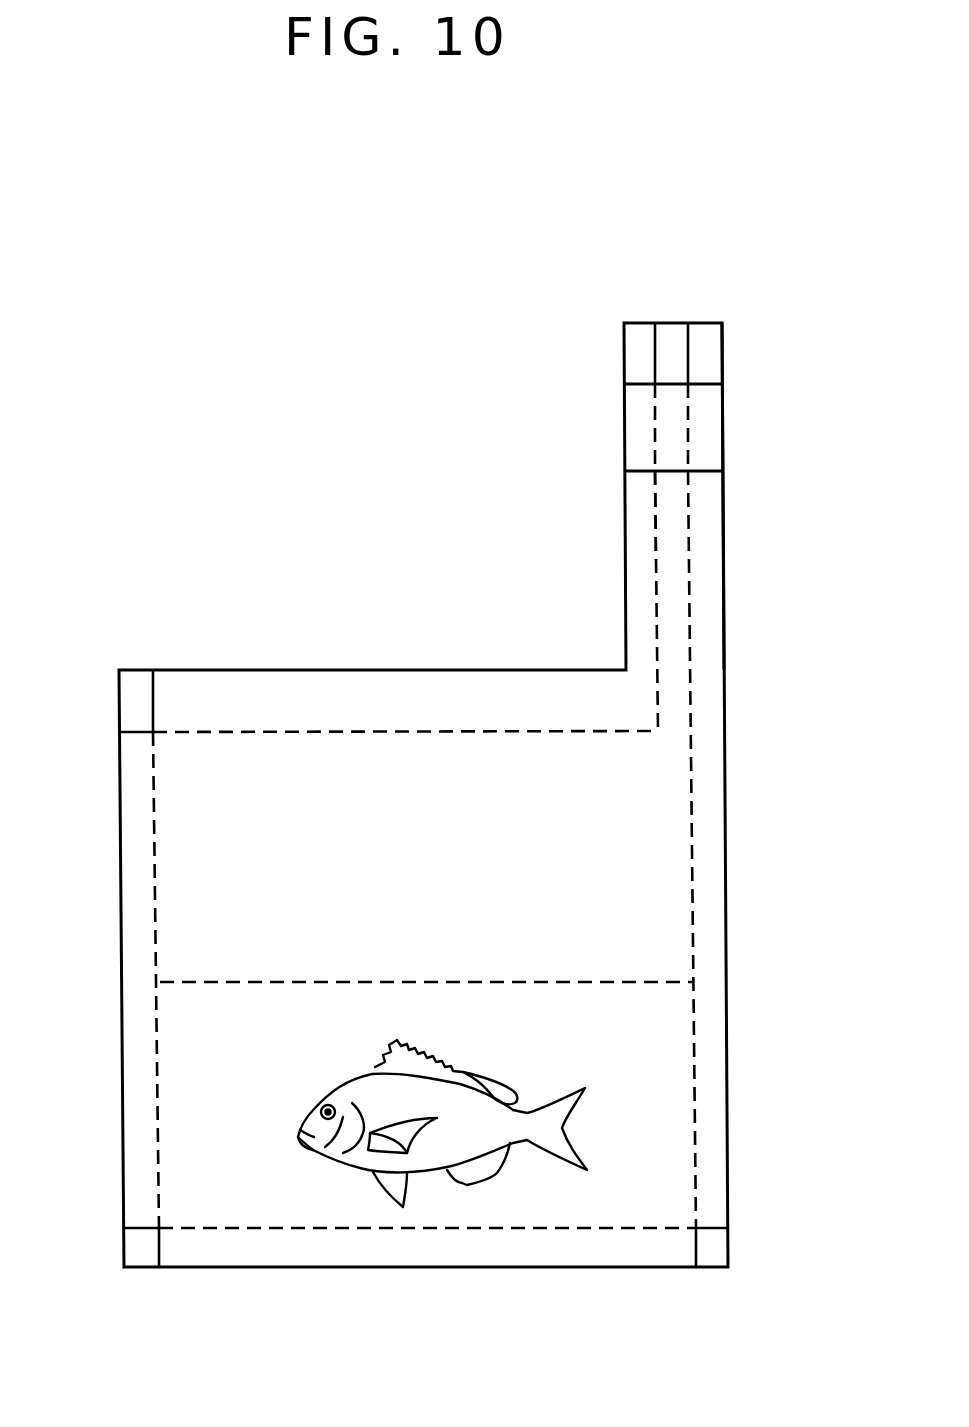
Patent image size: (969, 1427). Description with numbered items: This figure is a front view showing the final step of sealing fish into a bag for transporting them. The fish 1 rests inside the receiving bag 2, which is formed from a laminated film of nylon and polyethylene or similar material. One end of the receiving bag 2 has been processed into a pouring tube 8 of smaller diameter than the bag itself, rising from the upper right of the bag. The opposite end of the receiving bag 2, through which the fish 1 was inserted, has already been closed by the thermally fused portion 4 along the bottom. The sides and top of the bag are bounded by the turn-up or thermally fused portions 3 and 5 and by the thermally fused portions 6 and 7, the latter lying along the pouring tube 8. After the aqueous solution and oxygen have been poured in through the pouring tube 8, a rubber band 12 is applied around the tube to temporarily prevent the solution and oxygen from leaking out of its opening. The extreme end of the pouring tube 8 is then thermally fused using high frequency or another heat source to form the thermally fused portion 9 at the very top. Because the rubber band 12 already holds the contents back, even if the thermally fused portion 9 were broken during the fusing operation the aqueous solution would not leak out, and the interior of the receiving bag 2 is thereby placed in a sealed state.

The fish 1 is at (497, 1078).
The receiving bag 2 is at (725, 818).
The turn-up portion or thermally fused portion 3 is at (708, 939).
The thermally fused portion 4 is at (455, 1245).
The turn-up portion or thermally fused portion 5 is at (138, 1068).
The thermally fused portion 6 is at (357, 705).
The thermally fused portion 7 is at (642, 428).
The pouring tube 8 is at (723, 528).
The thermally fused portion 9 is at (665, 352).
The rubber band 12 is at (647, 473).